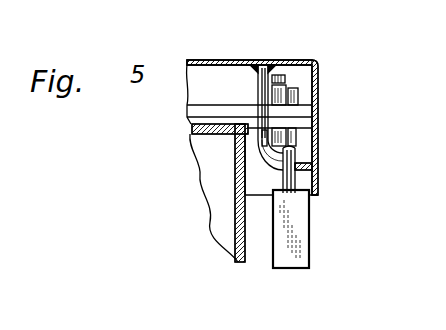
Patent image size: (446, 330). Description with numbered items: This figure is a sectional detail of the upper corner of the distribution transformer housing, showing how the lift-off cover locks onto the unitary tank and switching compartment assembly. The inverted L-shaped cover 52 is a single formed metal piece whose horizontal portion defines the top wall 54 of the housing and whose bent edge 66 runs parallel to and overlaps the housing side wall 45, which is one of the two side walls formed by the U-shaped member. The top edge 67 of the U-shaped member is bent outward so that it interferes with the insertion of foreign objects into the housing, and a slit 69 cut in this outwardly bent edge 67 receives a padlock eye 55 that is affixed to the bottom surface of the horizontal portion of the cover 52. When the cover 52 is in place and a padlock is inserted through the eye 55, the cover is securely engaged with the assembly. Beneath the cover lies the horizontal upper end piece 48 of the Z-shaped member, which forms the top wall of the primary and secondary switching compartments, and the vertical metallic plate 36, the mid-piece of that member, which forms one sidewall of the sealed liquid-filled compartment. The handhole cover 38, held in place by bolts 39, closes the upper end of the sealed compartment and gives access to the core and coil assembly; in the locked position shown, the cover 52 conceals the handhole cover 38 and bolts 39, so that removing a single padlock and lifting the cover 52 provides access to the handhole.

The vertical metallic plate 36 is at (217, 183).
The handhole cover 38 is at (205, 107).
The bolts 39 is at (284, 74).
The side wall 45 is at (241, 262).
The upper end piece 48 is at (192, 129).
The inverted L-shaped cover 52 is at (323, 65).
The top wall 54 is at (199, 60).
The padlock eye 55 is at (258, 78).
The edge of cover 66 is at (318, 186).
The top edge of U-shaped member 67 is at (287, 127).
The slit 69 is at (318, 106).